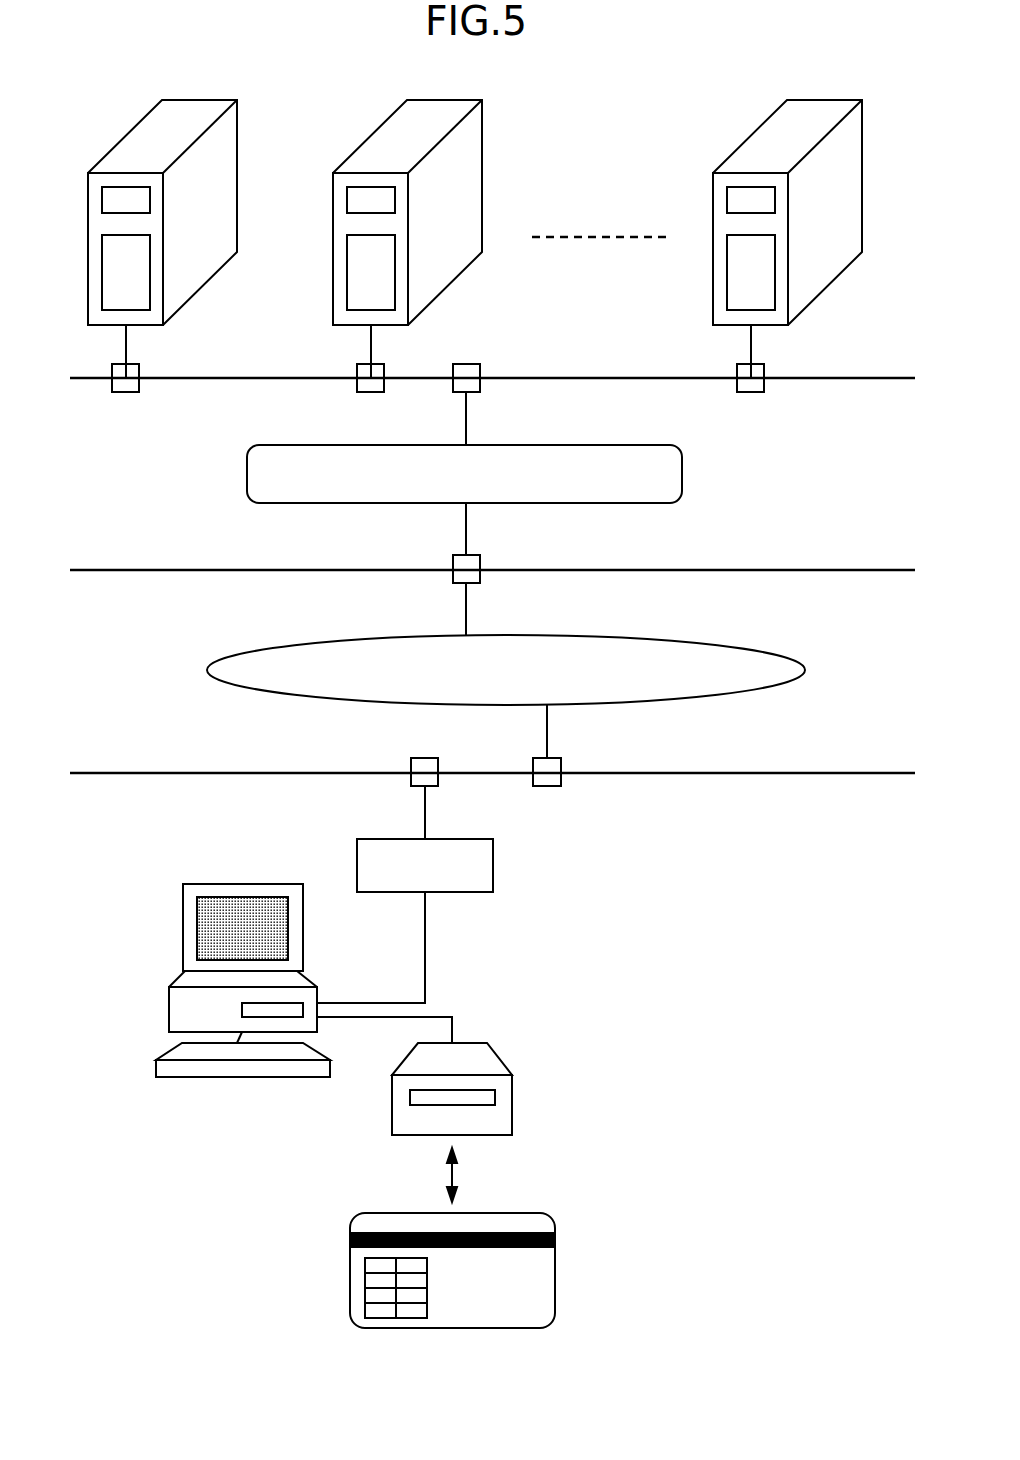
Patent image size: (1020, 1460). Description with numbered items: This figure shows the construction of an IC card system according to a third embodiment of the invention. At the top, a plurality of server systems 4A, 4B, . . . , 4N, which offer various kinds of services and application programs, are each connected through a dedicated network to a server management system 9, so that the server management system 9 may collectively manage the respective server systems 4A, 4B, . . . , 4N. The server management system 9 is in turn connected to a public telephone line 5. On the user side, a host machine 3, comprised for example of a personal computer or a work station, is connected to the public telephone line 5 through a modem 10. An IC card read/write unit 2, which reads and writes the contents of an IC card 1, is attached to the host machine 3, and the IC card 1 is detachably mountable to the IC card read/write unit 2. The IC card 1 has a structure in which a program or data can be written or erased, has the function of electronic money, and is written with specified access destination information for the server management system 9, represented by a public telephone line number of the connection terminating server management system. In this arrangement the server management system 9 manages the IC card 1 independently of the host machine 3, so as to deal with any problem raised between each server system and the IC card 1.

The IC card 1 is at (350, 1268).
The IC card read/write unit 2 is at (512, 1112).
The host machine 3 is at (169, 1006).
The server system 4A is at (118, 145).
The server system 4B is at (363, 145).
The server system 4N is at (743, 145).
The public telephone line 5 is at (805, 670).
The server management system 9 is at (682, 478).
The modem 10 is at (493, 870).